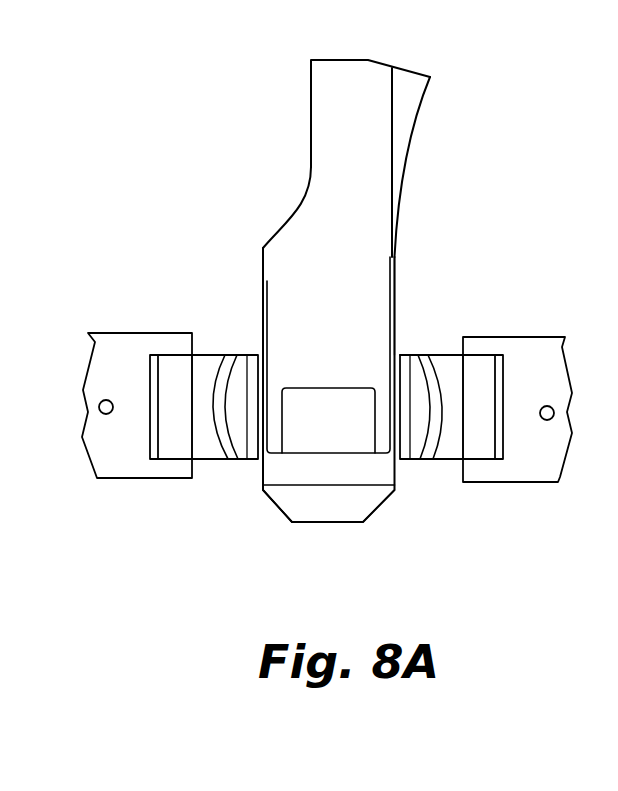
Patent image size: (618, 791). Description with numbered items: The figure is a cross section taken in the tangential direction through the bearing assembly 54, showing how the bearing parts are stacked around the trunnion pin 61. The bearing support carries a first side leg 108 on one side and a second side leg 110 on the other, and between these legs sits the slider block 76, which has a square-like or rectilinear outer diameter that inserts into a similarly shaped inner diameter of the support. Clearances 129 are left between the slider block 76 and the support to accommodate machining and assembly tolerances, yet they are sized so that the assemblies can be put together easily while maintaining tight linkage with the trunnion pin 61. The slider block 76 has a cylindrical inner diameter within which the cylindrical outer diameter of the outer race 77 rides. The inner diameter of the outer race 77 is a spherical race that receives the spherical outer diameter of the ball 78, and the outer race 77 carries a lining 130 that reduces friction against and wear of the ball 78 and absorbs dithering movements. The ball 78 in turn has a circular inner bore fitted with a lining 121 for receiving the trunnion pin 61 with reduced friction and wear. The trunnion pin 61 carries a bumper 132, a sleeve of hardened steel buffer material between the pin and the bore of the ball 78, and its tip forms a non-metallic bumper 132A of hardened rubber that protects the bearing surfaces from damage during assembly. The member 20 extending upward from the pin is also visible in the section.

The tool body 20 is at (408, 97).
The bearing assembly 54 is at (535, 308).
The trunnion pin 61 is at (341, 347).
The slider block 76 is at (175, 447).
The outer race 77 is at (207, 363).
The ball 78 is at (246, 363).
The first side leg 108 is at (553, 465).
The second side leg 110 is at (135, 459).
The lining 121 is at (397, 356).
The clearances 129 is at (157, 342).
The lining 130 is at (229, 455).
The bumper 132 is at (372, 470).
The bumper 132A is at (302, 505).